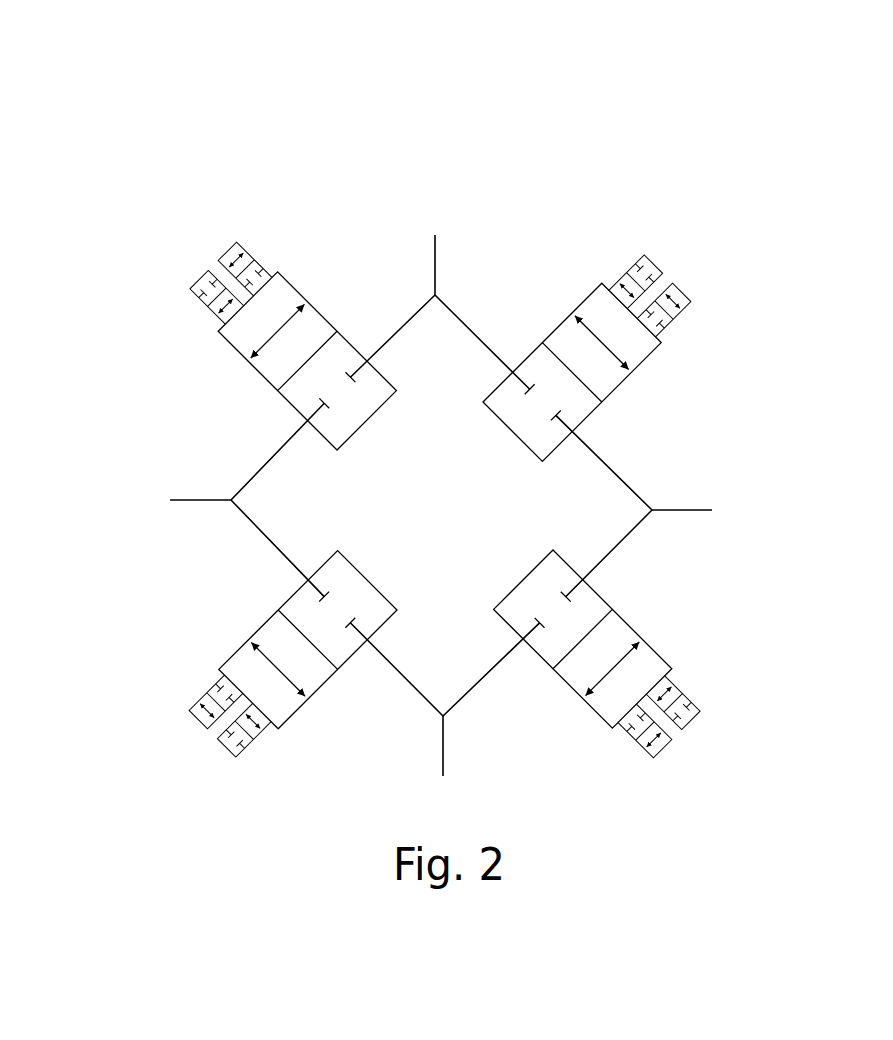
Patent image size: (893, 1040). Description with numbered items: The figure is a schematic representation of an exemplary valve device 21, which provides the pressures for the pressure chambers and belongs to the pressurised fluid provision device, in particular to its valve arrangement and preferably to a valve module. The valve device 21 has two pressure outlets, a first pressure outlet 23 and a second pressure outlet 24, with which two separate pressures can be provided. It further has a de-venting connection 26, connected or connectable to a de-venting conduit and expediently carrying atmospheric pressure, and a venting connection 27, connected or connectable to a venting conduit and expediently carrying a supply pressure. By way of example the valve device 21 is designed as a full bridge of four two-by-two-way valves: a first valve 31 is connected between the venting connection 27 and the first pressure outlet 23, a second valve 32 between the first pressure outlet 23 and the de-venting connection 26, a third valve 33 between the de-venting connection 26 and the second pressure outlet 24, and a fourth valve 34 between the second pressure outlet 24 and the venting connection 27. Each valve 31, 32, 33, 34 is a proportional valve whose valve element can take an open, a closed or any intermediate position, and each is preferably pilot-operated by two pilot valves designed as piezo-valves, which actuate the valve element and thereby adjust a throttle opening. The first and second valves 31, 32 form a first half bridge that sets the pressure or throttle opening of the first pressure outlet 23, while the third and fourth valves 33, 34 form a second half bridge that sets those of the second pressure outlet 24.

The valve device 21 is at (123, 82).
The first pressure outlet 23 is at (682, 499).
The second pressure outlet 24 is at (200, 487).
The de-venting connection 26 is at (429, 747).
The venting connection 27 is at (420, 265).
The first 2/2-way valve 31 is at (622, 388).
The second 2/2-way valve 32 is at (655, 650).
The third 2/2-way valve 33 is at (238, 650).
The fourth 2/2-way valve 34 is at (305, 293).